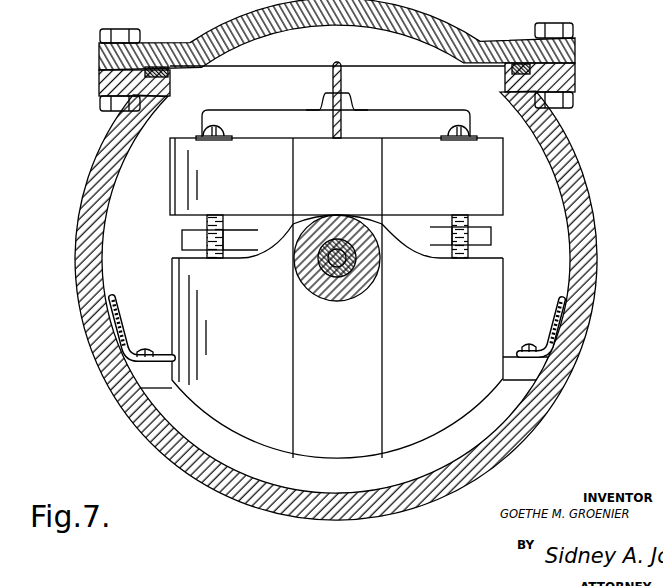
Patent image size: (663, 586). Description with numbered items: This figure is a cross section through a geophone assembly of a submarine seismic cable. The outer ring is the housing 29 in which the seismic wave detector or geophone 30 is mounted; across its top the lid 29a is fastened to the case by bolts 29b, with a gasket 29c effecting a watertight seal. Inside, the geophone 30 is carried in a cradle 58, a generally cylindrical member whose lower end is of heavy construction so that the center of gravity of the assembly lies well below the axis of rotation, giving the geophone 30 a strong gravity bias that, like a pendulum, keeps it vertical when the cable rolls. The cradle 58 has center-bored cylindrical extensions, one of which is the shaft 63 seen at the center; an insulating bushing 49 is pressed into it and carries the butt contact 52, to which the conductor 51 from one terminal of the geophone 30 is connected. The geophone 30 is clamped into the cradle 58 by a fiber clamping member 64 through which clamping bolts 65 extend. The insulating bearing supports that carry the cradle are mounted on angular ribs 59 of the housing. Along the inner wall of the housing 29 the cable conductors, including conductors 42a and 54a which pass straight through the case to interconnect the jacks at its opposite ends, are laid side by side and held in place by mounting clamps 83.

The housing 29 is at (593, 281).
The lid 29a is at (390, 25).
The bolts 29b is at (104, 39).
The gasket 29c is at (168, 74).
The geophone 30 is at (407, 116).
The conductor 51 is at (342, 84).
The clamping bolts 65 is at (207, 133).
The fiber clamping member 64 is at (492, 170).
The shaft 63 is at (378, 258).
The insulating bushing 49 is at (347, 277).
The butt contact 52 is at (329, 272).
The cradle 58 is at (427, 416).
The angular ribs 59 is at (517, 378).
The mounting clamp 83 is at (337, 320).
The conductor 42a is at (121, 334).
The conductor 54a is at (130, 351).